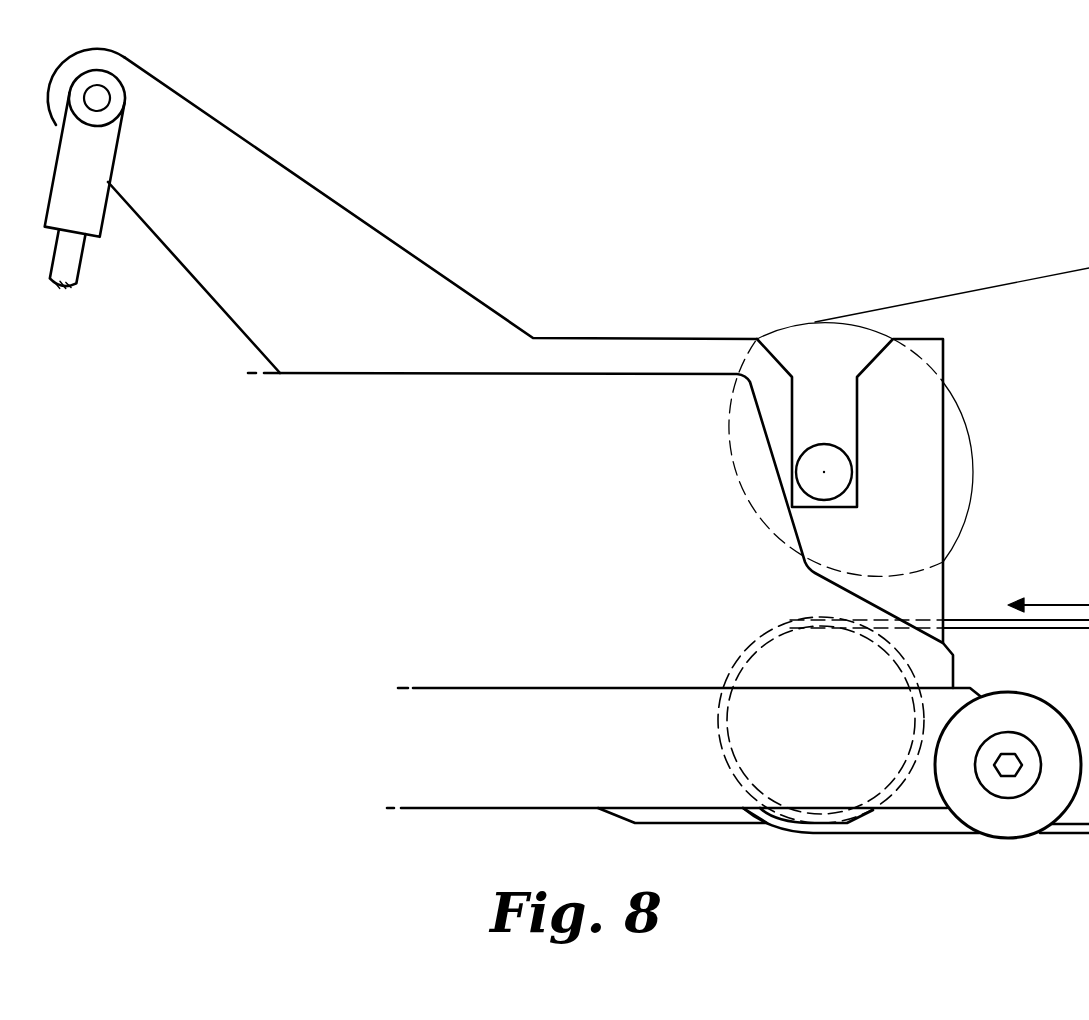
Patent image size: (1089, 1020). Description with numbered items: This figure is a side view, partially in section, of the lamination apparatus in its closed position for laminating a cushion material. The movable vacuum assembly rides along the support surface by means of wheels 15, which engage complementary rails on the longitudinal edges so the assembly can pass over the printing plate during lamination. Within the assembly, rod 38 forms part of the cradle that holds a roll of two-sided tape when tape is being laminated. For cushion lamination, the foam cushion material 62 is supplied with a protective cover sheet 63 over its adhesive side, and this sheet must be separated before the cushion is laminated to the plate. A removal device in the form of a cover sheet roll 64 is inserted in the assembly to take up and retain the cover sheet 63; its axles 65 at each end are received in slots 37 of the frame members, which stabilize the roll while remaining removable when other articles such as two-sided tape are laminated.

The wheels 15 is at (1003, 822).
The slots 37 is at (797, 422).
The rod 38 is at (753, 730).
The foam cushion material 62 is at (740, 652).
The cover sheet 63 is at (920, 300).
The cover sheet roll 64 is at (712, 540).
The axles 65 is at (842, 475).